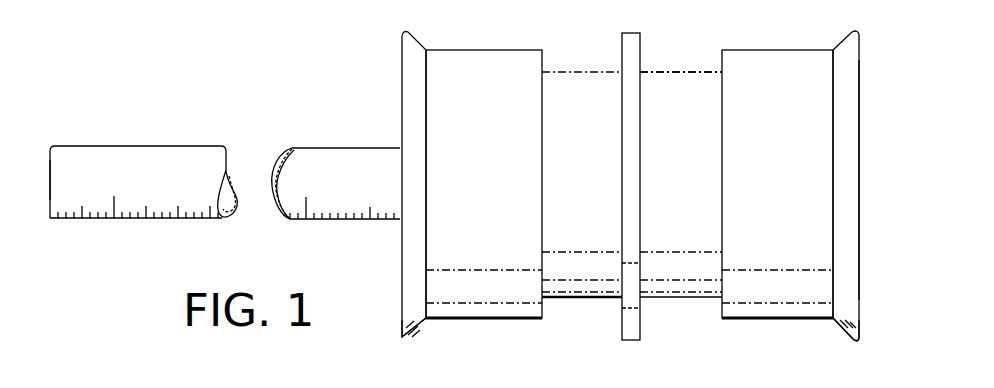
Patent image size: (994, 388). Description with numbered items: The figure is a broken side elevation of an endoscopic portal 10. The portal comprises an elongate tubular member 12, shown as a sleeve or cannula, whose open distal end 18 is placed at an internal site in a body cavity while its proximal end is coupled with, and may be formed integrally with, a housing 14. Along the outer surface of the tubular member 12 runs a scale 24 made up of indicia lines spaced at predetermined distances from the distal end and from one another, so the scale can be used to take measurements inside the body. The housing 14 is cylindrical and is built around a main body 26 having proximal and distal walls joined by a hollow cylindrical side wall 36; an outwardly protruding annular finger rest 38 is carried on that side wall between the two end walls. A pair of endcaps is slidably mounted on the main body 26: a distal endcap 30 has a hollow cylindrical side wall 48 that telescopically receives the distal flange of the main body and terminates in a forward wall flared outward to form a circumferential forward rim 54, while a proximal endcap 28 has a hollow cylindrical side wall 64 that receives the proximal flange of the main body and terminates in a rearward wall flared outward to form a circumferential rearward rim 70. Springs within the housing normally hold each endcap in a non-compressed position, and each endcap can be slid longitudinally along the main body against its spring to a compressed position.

The endoscopic portal 10 is at (871, 75).
The tubular member 12 is at (181, 144).
The housing 14 is at (672, 64).
The distal end 18 is at (50, 158).
The scale 24 is at (338, 170).
The main body 26 is at (582, 301).
The proximal endcap 28 is at (848, 34).
The distal endcap 30 is at (396, 40).
The cylindrical side wall 36 is at (585, 72).
The finger rest 38 is at (630, 32).
The cylindrical side wall 48 is at (488, 50).
The forward rim 54 is at (403, 339).
The cylindrical side wall 64 is at (748, 50).
The rearward rim 70 is at (841, 326).